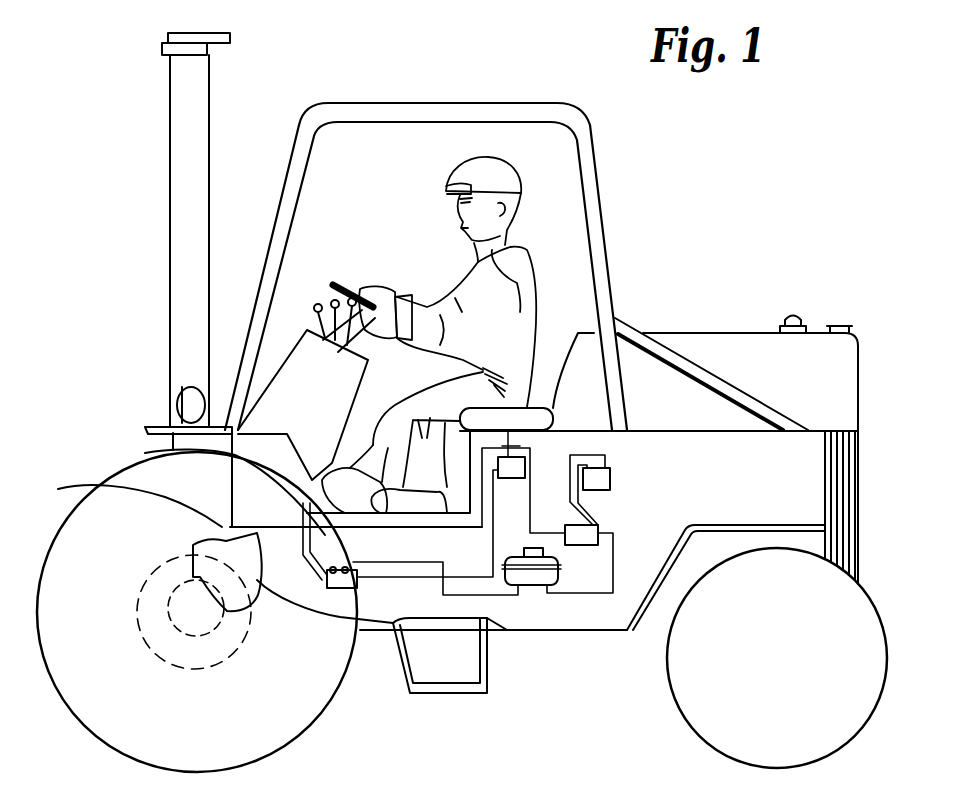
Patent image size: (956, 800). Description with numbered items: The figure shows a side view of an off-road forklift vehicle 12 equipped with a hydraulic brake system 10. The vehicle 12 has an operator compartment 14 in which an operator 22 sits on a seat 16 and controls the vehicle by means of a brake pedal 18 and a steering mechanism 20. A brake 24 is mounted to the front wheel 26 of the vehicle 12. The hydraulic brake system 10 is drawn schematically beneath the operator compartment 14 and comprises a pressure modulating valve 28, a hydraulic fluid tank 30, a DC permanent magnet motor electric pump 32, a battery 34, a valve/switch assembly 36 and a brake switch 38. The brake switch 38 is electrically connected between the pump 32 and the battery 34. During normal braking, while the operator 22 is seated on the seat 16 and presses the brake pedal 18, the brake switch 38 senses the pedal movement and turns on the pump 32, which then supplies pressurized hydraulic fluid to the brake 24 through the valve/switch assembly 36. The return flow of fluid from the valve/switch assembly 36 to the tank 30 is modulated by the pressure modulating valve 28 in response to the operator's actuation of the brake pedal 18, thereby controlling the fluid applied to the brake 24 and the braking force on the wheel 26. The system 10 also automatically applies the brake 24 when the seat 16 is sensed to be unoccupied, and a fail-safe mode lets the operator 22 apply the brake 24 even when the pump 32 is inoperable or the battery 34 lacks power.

The hydraulic brake system 10 is at (598, 544).
The off-road forklift vehicle 12 is at (627, 317).
The operator compartment 14 is at (545, 356).
The seat 16 is at (553, 445).
The brake pedal 18 is at (150, 453).
The steering mechanism 20 is at (347, 287).
The operator 22 is at (535, 300).
The brake 24 is at (193, 553).
The front wheel 26 is at (107, 732).
The pressure modulating valve 28 is at (340, 588).
The hydraulic fluid tank 30 is at (530, 585).
The DC electric pump 32 is at (598, 532).
The battery 34 is at (610, 483).
The valve/switch assembly 36 is at (522, 463).
The brake switch 38 is at (93, 486).